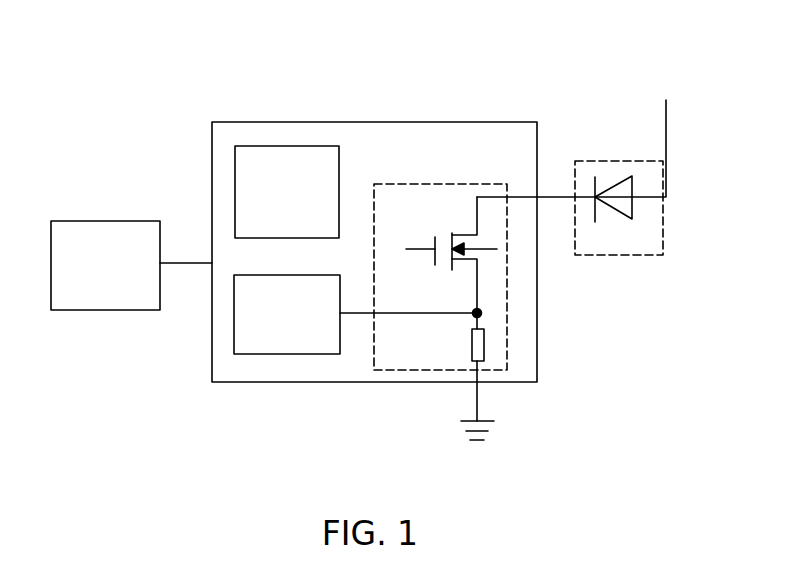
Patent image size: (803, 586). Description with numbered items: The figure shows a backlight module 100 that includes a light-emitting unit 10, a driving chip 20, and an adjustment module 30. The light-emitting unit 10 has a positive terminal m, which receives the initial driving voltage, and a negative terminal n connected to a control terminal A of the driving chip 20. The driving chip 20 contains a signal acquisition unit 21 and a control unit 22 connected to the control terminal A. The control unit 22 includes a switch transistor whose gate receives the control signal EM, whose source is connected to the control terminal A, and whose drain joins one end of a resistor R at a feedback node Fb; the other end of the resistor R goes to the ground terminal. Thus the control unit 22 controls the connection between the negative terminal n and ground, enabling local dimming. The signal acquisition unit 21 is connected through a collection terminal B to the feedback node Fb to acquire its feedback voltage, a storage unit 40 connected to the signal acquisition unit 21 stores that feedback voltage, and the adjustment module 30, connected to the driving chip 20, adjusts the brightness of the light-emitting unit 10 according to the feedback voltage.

The backlight module 100 is at (192, 72).
The light-emitting unit 10 is at (625, 255).
The driving chip 20 is at (222, 382).
The signal acquisition unit 21 is at (286, 354).
The control unit 22 is at (375, 369).
The adjustment module 30 is at (97, 310).
The storage unit 40 is at (235, 170).